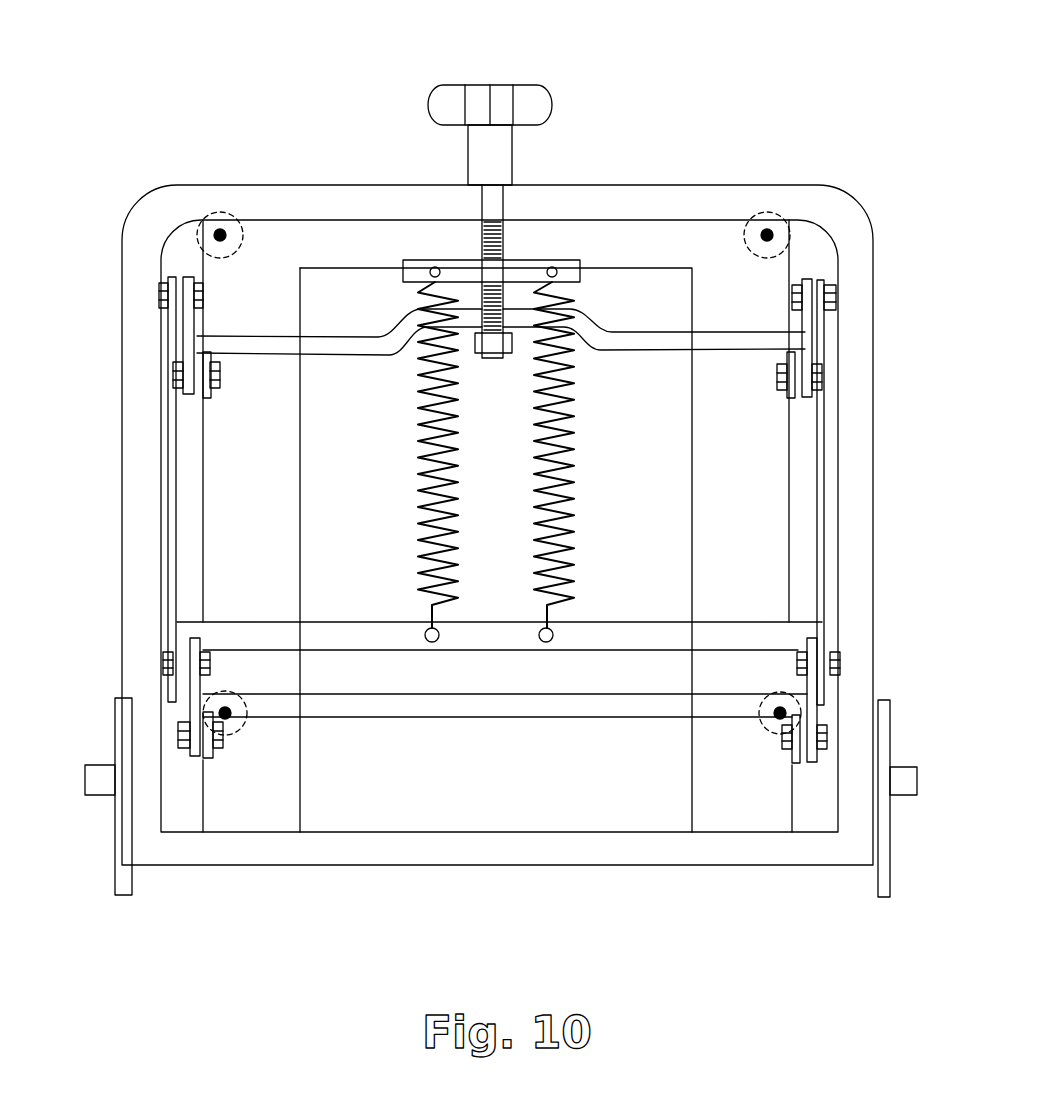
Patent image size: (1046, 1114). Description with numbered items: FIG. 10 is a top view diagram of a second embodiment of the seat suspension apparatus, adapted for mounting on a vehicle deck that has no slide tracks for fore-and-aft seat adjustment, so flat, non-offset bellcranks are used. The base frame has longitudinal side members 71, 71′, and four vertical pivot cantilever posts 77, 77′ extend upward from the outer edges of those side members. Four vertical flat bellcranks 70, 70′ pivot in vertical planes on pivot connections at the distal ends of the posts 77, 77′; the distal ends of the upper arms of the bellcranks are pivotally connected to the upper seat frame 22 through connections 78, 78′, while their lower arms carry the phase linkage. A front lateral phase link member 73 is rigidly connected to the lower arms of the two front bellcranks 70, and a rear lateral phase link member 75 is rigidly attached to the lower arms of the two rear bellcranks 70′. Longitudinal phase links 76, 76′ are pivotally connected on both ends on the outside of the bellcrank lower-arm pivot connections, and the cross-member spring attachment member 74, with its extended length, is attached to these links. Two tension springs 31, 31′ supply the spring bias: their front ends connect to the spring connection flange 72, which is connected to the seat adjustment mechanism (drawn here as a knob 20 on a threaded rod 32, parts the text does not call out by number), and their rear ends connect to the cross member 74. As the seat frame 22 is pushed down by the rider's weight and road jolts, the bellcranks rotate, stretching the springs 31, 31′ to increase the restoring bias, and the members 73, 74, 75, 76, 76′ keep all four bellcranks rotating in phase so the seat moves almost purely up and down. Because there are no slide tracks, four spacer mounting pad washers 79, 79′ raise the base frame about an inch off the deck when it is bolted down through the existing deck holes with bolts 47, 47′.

The hand knob 20 is at (503, 96).
The seat frame 22 is at (862, 440).
The spring 31 is at (537, 402).
The spring 31′ is at (450, 468).
The threaded adjusting rod 32 is at (483, 240).
The bolt 47 is at (770, 228).
The bolt 47′ is at (775, 722).
The vertical flat bellcrank 70 is at (803, 331).
The rear bellcrank 70′ is at (810, 716).
The longitudinal side member 71 is at (528, 550).
The longitudinal side member 71′ is at (263, 550).
The spring connection flange 72 is at (417, 277).
The front lateral phase link member 73 is at (657, 350).
The cross-member spring attachment member 74 is at (345, 635).
The rear lateral phase link member 75 is at (510, 713).
The longitudinal phase link 76 is at (822, 513).
The longitudinal phase link 76′ is at (178, 513).
The vertical pivot cantilever post 77 is at (792, 393).
The vertical pivot cantilever post 77′ is at (797, 757).
The connection 78 is at (790, 282).
The connection 78′ is at (797, 663).
The spacer mounting pad washer 79 is at (760, 230).
The spacer mounting pad washer 79′ is at (777, 725).